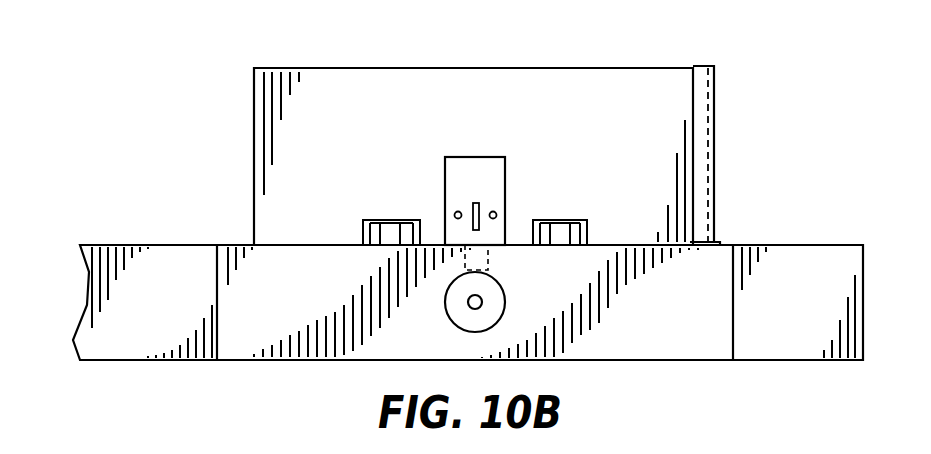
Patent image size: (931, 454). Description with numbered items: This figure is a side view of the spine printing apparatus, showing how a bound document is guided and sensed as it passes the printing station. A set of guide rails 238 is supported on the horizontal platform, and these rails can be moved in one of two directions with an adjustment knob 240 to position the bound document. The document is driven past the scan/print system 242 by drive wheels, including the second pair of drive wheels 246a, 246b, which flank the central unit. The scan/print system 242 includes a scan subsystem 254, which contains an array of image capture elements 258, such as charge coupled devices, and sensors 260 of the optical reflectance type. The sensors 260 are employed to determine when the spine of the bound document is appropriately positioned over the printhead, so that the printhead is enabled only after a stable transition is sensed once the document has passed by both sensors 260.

The guide rails 238 is at (617, 68).
The adjustment knob 240 is at (505, 300).
The scan/print system 242 is at (477, 140).
The drive wheel 246a is at (382, 228).
The drive wheel 246b is at (560, 228).
The scan subsystem 254 is at (443, 160).
The image capture elements 258 is at (480, 203).
The sensors 260 is at (457, 211).